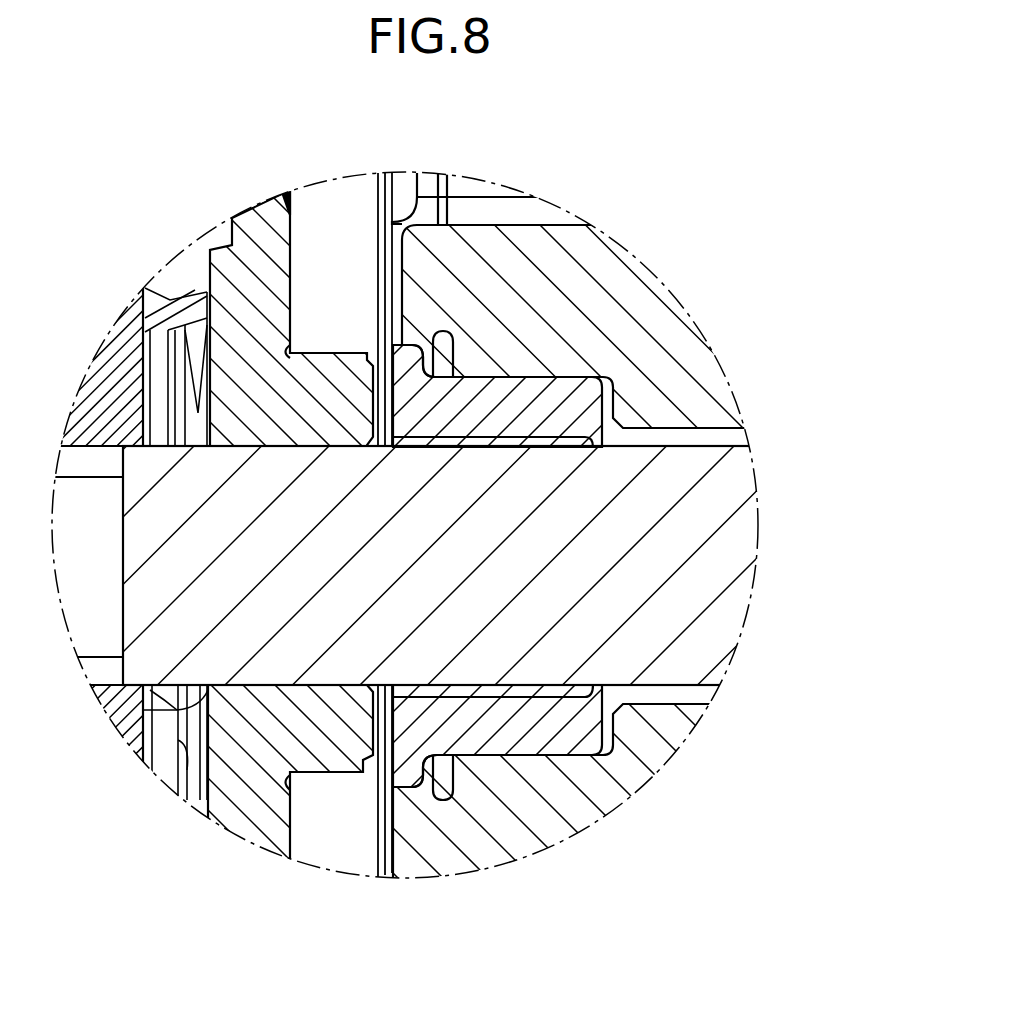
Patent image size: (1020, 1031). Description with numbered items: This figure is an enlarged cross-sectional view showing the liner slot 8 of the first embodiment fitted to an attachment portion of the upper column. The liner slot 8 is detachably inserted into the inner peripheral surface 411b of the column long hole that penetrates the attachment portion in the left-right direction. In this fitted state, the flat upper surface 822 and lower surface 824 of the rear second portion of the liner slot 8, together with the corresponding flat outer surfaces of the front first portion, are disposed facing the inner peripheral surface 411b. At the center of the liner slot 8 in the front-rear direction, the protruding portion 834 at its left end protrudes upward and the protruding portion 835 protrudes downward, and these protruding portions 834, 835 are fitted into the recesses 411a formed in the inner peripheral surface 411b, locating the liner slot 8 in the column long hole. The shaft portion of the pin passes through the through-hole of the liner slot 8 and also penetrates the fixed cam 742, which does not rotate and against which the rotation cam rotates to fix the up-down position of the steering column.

The liner slot 8 is at (497, 733).
The recesses 411a is at (448, 372).
The inner peripheral surface 411b is at (543, 383).
The fixed cam 742 is at (257, 743).
The upper surface 822 is at (525, 377).
The lower surface 824 is at (510, 757).
The protruding portion 834 is at (405, 362).
The protruding portion 835 is at (387, 777).